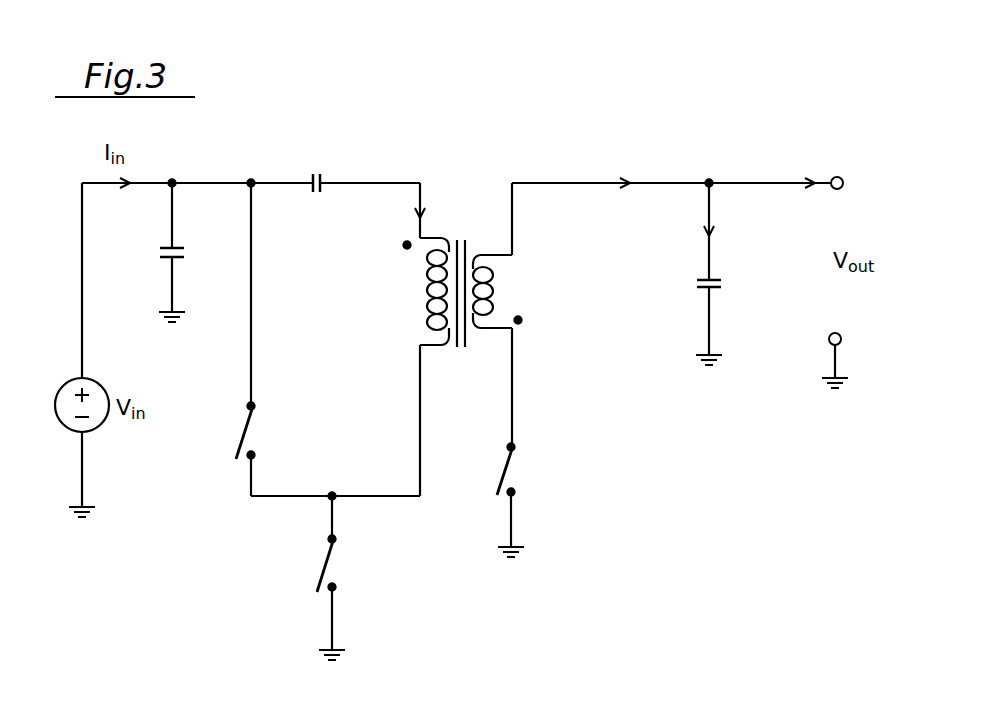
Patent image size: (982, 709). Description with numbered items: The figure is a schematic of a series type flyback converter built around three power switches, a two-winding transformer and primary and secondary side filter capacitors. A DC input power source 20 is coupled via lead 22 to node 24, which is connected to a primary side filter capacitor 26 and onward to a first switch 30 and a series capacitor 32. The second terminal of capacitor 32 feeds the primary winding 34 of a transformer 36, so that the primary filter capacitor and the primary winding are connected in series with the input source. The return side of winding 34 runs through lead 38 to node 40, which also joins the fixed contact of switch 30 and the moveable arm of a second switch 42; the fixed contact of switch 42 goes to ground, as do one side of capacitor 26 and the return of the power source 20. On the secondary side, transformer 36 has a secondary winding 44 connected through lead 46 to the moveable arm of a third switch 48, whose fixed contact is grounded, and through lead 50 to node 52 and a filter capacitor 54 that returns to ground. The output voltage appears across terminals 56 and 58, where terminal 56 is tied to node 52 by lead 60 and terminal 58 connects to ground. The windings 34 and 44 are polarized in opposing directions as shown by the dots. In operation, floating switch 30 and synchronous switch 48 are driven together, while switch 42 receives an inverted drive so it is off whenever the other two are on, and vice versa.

The DC input power source 20 is at (103, 425).
The lead 22 is at (137, 186).
The node 24 is at (172, 181).
The capacitor 26 is at (182, 247).
The first switch 30 is at (240, 440).
The series capacitor 32 is at (308, 195).
The primary winding 34 is at (428, 329).
The transformer 36 is at (473, 170).
The lead 38 is at (335, 523).
The node 40 is at (332, 493).
The second switch 42 is at (323, 572).
The secondary winding 44 is at (494, 275).
The lead 46 is at (513, 390).
The third switch 48 is at (502, 466).
The lead 50 is at (556, 188).
The node 52 is at (709, 181).
The capacitor 54 is at (715, 290).
The terminal 56 is at (838, 176).
The terminal 58 is at (829, 339).
The lead 60 is at (770, 186).